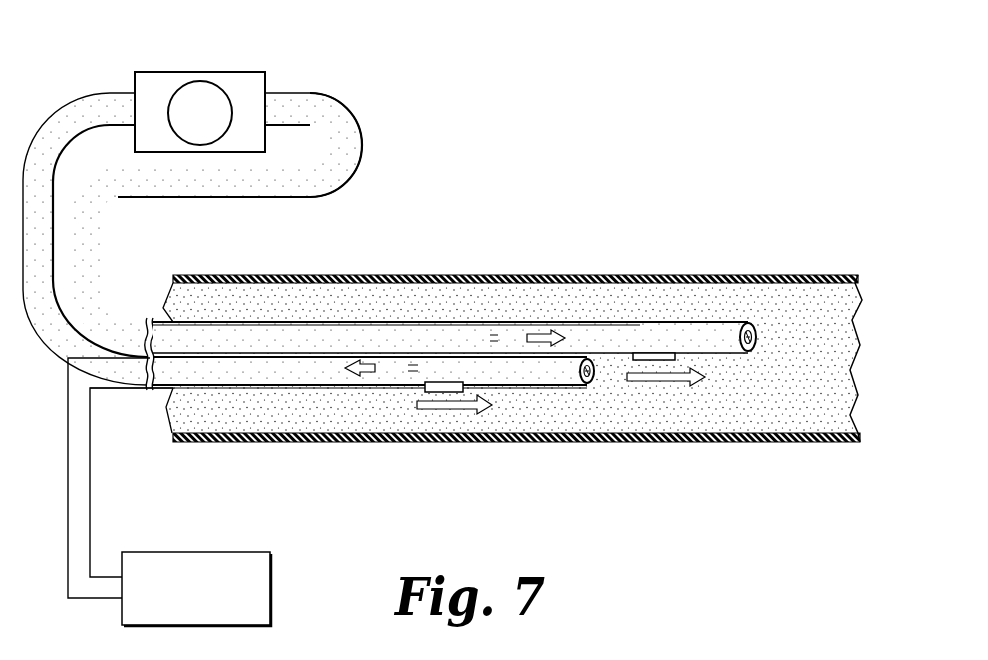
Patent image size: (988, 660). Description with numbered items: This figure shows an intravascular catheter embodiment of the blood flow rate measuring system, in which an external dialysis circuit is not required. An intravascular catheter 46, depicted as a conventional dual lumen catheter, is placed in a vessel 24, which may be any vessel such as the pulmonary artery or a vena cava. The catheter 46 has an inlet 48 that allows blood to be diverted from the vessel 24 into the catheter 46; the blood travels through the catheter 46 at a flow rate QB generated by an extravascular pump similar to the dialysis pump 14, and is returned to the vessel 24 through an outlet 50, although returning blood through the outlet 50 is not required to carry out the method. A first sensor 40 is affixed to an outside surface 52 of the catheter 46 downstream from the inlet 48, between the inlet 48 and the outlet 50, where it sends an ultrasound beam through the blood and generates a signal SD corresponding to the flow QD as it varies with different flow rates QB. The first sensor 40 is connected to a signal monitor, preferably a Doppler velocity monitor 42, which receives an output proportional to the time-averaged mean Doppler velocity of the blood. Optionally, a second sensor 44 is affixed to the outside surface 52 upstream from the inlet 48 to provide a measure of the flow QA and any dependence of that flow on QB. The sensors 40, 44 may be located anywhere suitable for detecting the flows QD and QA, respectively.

The dialysis pump 14 is at (227, 72).
The vessel 24 is at (192, 413).
The first sensor 40 is at (658, 353).
The Doppler velocity monitor 42 is at (232, 552).
The second sensor 44 is at (453, 382).
The intravascular catheter 46 is at (340, 322).
The inlet 48 is at (593, 380).
The outlet 50 is at (752, 326).
The outside surface 52 is at (280, 387).